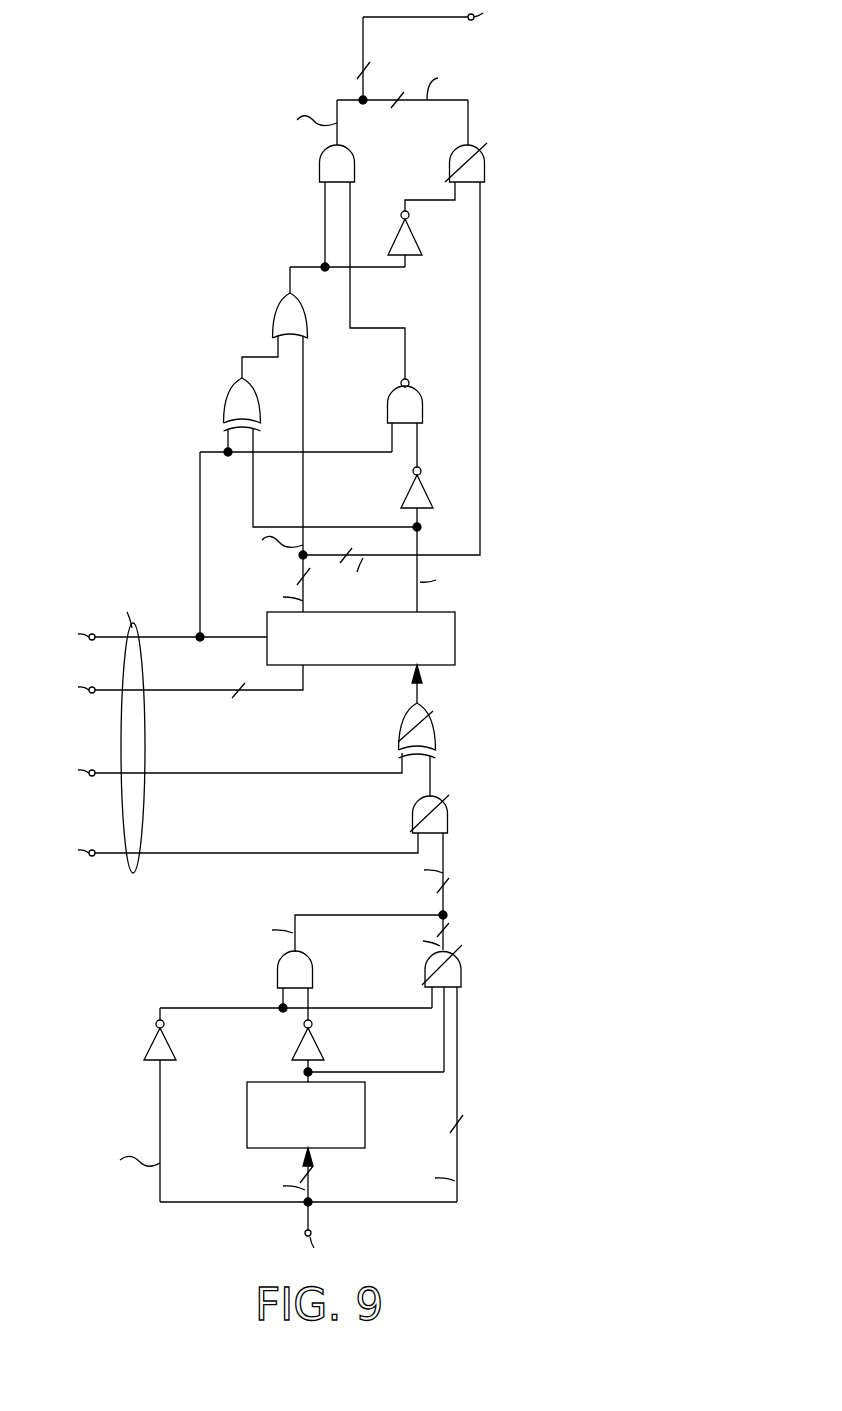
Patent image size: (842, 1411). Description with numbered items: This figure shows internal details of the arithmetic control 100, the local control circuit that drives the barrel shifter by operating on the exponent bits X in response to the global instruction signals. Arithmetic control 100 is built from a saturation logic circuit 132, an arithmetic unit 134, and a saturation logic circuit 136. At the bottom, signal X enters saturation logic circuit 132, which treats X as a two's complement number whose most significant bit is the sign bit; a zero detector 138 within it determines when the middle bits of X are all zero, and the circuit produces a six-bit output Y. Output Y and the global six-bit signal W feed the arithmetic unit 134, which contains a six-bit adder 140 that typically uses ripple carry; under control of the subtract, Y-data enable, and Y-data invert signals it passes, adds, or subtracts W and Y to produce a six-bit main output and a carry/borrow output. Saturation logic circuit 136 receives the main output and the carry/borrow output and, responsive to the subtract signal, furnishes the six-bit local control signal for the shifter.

The arithmetic control 100 is at (153, 548).
The saturation logic circuit 136 is at (506, 498).
The arithmetic unit 134 is at (506, 610).
The adder 140 is at (348, 667).
The saturation logic circuit 132 is at (506, 1140).
The zero detector 138 is at (365, 1110).